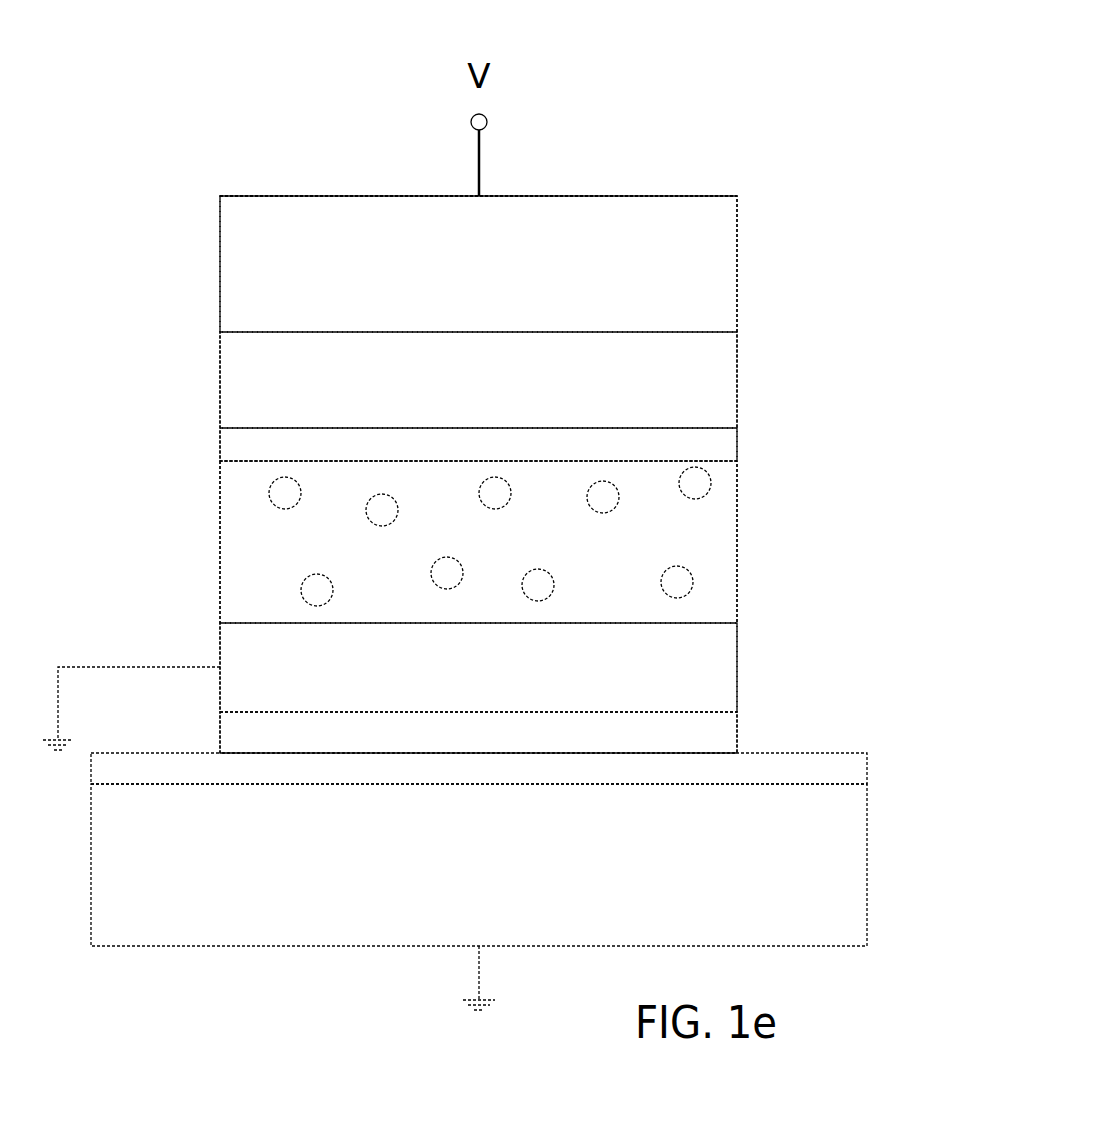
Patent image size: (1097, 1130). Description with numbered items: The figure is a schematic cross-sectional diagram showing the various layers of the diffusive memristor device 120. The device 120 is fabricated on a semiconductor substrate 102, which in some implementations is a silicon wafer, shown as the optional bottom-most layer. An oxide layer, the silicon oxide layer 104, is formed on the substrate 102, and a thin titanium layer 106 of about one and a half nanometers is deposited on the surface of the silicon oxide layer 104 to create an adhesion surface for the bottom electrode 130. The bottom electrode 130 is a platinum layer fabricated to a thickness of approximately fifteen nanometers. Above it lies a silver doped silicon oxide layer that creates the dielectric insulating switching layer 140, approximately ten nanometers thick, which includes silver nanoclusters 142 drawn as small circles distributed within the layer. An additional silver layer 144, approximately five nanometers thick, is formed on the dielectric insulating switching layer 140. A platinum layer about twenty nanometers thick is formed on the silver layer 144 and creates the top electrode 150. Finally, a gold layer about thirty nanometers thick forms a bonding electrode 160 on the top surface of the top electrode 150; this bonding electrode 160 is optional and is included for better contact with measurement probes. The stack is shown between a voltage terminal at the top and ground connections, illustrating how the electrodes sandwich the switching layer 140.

The diffusive memristor device 120 is at (856, 111).
The bonding electrode 160 is at (746, 265).
The top electrode 150 is at (746, 381).
The silver layer 144 is at (746, 445).
The silver nanoclusters 142 is at (262, 492).
The dielectric insulating switching layer 140 is at (745, 593).
The bottom electrode 130 is at (745, 668).
The titanium layer 106 is at (745, 732).
The silicon oxide layer 104 is at (874, 768).
The semiconductor substrate 102 is at (874, 865).